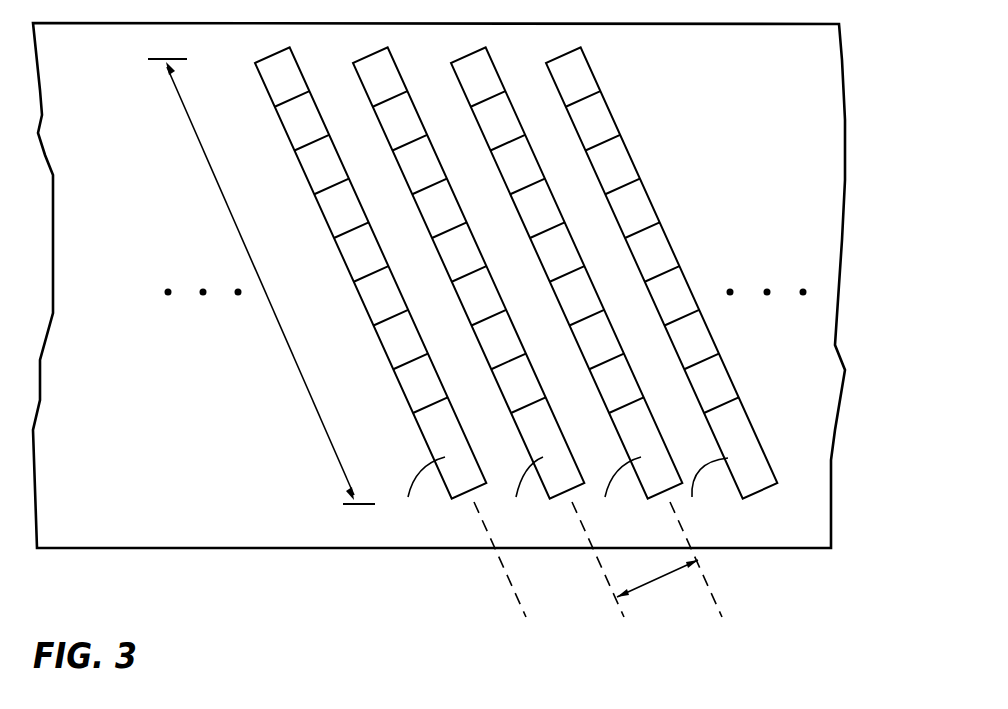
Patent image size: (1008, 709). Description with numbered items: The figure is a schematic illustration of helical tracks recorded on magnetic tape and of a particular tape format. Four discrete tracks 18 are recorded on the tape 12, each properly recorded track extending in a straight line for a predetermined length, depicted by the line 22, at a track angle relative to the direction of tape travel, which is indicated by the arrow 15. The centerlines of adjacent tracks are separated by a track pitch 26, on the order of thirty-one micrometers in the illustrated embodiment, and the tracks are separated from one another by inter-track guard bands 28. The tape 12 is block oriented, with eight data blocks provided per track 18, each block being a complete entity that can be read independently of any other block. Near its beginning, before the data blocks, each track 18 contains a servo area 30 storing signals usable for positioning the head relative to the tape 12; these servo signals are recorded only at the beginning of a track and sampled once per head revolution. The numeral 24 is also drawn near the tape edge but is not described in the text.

The tape 12 is at (153, 549).
The arrow indicating direction of tape travel 15 is at (922, 183).
The tracks 18 is at (570, 56).
The line depicting predetermined track length 22 is at (317, 405).
The tape edge 24 is at (466, 506).
The track pitch 26 is at (660, 578).
The inter-track guard bands 28 is at (622, 315).
The servo area 30 is at (745, 412).